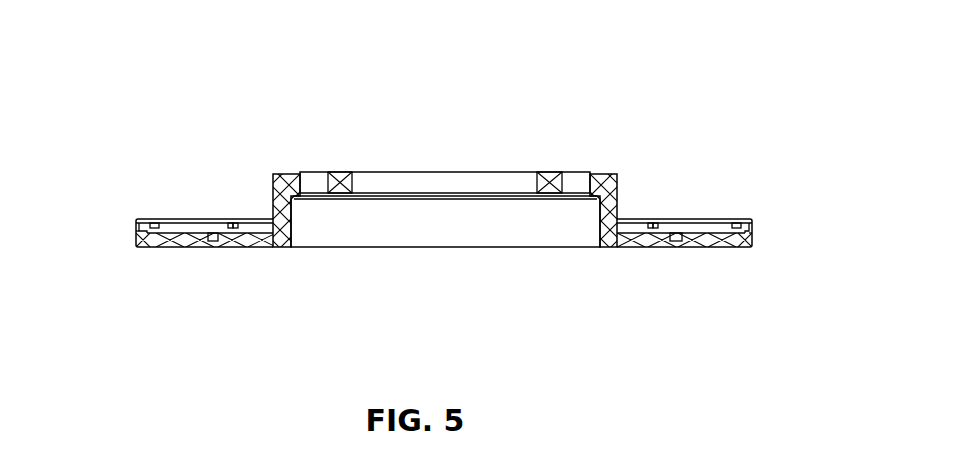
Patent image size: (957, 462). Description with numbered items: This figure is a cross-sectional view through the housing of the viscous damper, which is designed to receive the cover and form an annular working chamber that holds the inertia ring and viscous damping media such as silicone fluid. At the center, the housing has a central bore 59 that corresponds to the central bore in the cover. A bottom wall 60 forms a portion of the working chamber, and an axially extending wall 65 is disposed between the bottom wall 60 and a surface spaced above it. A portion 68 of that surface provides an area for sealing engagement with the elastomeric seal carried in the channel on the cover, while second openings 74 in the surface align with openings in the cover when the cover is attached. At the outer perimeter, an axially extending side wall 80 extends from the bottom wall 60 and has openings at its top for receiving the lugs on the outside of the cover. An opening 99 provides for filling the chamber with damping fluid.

The central bore 59 is at (463, 178).
The bottom wall 60 is at (192, 219).
The axially extending wall 65 is at (617, 202).
The portion of the surface 68 is at (285, 173).
The second openings 74 is at (320, 172).
The axially extending side wall 80 is at (137, 231).
The opening 99 is at (217, 247).